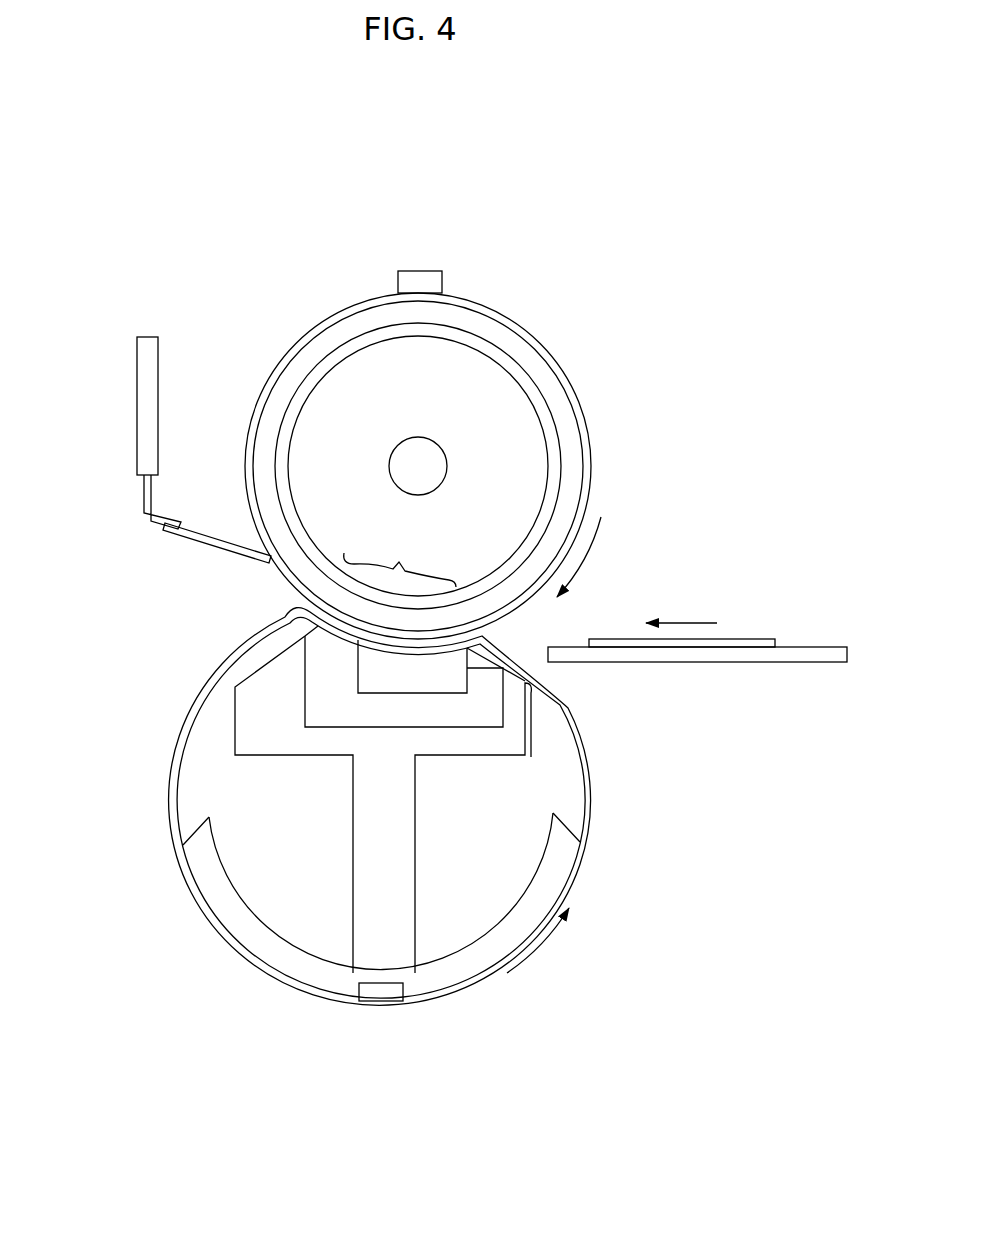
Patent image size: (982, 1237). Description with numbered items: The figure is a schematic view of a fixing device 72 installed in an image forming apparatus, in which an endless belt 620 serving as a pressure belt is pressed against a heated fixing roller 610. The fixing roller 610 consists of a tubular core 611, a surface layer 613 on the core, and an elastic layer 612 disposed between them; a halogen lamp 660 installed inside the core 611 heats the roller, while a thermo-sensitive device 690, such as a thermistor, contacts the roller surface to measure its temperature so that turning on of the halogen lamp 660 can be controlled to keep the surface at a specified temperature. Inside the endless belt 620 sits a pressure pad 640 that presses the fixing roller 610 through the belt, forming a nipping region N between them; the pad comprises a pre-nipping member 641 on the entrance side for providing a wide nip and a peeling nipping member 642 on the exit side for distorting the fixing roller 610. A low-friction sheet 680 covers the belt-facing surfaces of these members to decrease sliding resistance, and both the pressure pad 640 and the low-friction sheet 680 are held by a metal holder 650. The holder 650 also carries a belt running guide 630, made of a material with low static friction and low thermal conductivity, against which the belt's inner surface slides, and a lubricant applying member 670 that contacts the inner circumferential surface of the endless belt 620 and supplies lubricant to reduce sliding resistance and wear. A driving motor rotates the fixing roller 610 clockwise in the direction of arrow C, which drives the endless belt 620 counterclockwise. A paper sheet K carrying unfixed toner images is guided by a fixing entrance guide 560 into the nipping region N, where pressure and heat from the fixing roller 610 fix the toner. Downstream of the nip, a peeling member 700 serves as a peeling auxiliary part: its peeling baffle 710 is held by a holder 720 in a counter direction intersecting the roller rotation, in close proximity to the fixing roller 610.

The fixing device 72 is at (450, 166).
The fixing entrance guide 560 is at (790, 658).
The fixing roller 610 is at (556, 340).
The tubular core 611 is at (548, 415).
The elastic layer 612 is at (578, 449).
The surface layer 613 is at (588, 488).
The endless belt 620 is at (592, 778).
The belt running guide 630 is at (560, 870).
The pressure pad 640 is at (328, 728).
The pre-nipping member 641 is at (435, 686).
The peeling nipping member 642 is at (320, 640).
The holder 650 is at (245, 725).
The halogen lamp 660 is at (421, 443).
The lubricant applying member 670 is at (381, 1000).
The low-friction sheet 680 is at (532, 688).
The thermo-sensitive device 690 is at (432, 278).
The peeling member 700 is at (147, 544).
The peeling baffle 710 is at (207, 538).
The holder 720 is at (142, 494).
The nipping region N is at (400, 562).
The arrow C is at (582, 557).
The paper sheet K is at (762, 640).